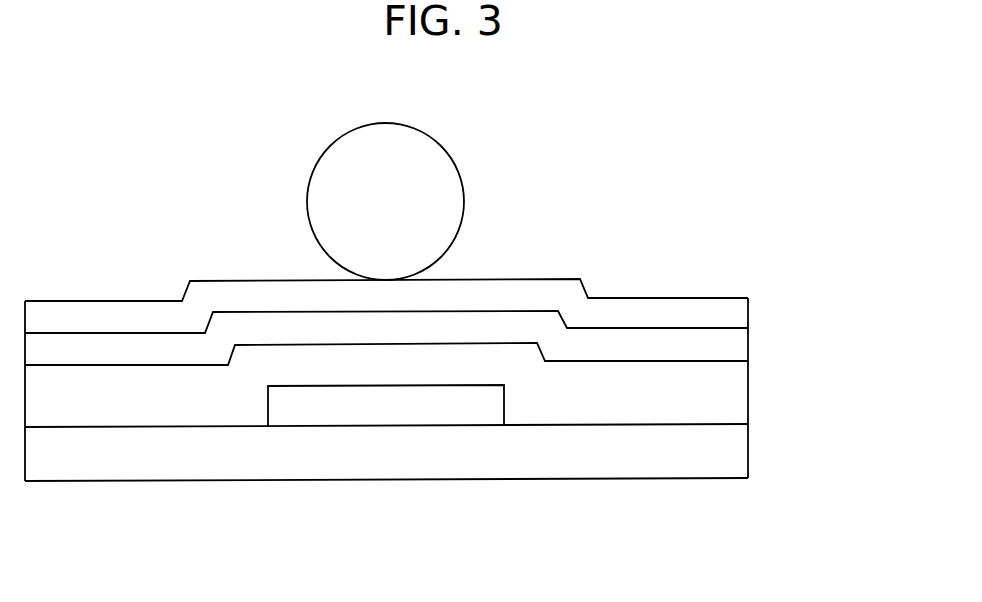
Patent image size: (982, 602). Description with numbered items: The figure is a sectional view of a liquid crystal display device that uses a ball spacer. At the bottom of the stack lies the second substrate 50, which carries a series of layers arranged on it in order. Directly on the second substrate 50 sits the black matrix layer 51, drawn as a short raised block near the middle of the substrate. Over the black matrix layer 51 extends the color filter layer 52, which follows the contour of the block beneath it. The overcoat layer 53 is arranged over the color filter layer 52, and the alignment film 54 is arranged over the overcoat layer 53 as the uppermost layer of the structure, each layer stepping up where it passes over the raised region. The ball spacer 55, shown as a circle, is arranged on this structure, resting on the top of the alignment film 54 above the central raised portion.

The second substrate 50 is at (733, 447).
The black matrix layer 51 is at (392, 415).
The color filter layer 52 is at (733, 396).
The overcoat layer 53 is at (733, 352).
The alignment film 54 is at (733, 308).
The ball spacer 55 is at (445, 182).